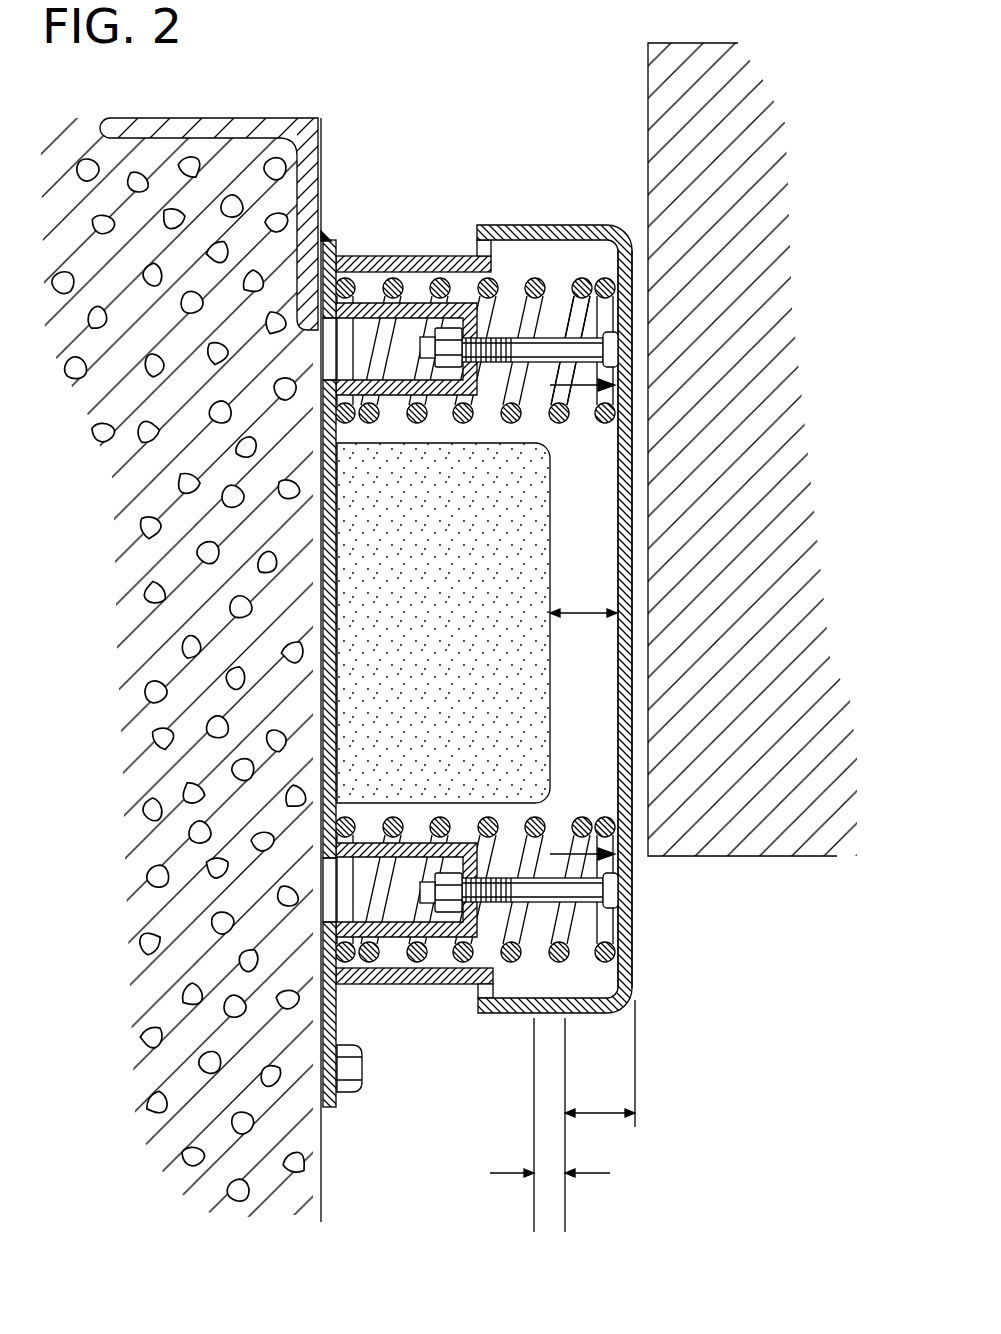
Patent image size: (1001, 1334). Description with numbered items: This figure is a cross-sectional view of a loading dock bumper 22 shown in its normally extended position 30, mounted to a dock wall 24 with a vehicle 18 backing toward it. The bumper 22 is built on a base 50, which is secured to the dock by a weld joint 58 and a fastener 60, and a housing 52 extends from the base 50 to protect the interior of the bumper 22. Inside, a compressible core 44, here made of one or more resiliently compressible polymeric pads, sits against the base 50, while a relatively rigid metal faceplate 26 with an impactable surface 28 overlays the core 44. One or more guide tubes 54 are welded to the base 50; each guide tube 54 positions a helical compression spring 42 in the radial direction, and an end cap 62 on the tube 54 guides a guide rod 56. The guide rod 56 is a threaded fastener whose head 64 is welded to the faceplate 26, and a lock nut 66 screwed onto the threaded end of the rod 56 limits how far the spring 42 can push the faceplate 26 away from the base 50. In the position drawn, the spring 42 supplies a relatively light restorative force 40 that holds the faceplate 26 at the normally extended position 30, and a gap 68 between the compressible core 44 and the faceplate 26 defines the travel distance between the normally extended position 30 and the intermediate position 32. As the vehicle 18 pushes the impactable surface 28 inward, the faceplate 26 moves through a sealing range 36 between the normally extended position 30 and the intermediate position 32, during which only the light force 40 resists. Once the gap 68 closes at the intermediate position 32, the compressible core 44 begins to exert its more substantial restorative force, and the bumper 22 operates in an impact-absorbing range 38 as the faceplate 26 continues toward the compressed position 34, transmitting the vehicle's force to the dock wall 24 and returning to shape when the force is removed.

The vehicle 18 is at (727, 856).
The bumper 22 is at (457, 140).
The dock wall 24 is at (323, 1150).
The faceplate 26 is at (632, 473).
The impactable surface 28 is at (632, 592).
The normally extended position 30 is at (635, 1085).
The intermediate position 32 is at (565, 1193).
The compressed position 34 is at (534, 1113).
The sealing range 36 is at (602, 1113).
The impact-absorbing range 38 is at (507, 1173).
The restorative force 40 is at (580, 392).
The spring 42 is at (538, 340).
The compressible core 44 is at (550, 738).
The base 50 is at (338, 244).
The housing 52 is at (418, 986).
The guide tube 54 is at (415, 302).
The guide rod 56 is at (562, 368).
The weld joint 58 is at (325, 233).
The fastener 60 is at (363, 1068).
The end cap 62 is at (495, 337).
The head 64 is at (608, 348).
The lock nut 66 is at (442, 330).
The gap 68 is at (582, 607).